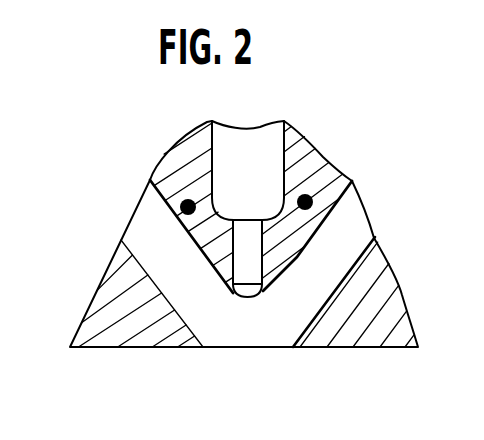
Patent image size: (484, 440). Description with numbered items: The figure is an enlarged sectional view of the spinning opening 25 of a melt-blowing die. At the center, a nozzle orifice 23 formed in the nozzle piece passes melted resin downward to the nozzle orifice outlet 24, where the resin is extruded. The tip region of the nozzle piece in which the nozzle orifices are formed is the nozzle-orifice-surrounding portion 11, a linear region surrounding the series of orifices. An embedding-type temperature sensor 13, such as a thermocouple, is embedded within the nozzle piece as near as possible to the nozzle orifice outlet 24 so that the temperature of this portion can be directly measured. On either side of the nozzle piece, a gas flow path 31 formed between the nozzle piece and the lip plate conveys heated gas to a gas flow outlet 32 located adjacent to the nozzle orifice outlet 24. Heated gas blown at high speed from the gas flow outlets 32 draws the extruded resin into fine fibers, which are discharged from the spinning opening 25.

The nozzle-orifice-surrounding portion 11 is at (198, 257).
The embedding-type temperature sensor 13 is at (305, 196).
The nozzle orifice 23 is at (250, 257).
The nozzle orifice outlet 24 is at (247, 303).
The spinning opening 25 is at (262, 349).
The gas flow path 31 is at (150, 243).
The gas flow outlet 32 is at (207, 307).